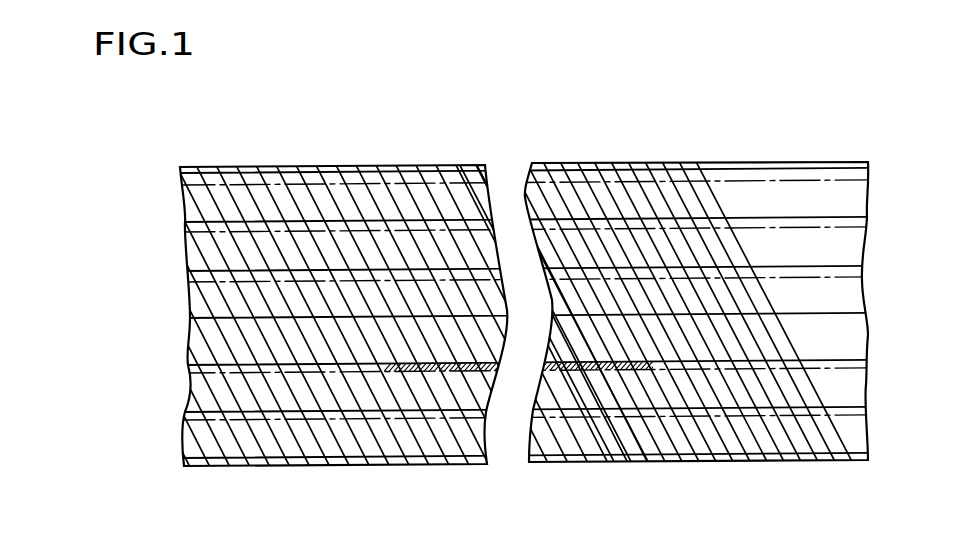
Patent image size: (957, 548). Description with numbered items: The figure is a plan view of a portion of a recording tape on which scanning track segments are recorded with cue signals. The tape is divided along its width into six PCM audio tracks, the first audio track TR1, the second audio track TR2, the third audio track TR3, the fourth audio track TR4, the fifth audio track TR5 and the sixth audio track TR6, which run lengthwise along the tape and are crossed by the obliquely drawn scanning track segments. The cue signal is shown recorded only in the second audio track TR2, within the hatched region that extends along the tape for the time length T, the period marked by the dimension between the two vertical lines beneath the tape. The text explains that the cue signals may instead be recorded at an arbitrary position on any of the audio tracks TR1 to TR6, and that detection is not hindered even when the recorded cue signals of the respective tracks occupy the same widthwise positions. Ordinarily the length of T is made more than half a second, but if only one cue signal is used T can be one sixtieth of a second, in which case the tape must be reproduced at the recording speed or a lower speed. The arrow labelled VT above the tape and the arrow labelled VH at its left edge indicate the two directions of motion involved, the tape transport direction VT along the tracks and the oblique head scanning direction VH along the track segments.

The audio track TR1 is at (550, 432).
The second audio track TR2 is at (550, 378).
The audio track TR3 is at (550, 330).
The audio track TR4 is at (550, 282).
The audio track TR5 is at (550, 233).
The audio track TR6 is at (550, 185).
The time length T is at (653, 361).
The tape transport velocity VT is at (620, 145).
The head scanning velocity VH is at (182, 330).